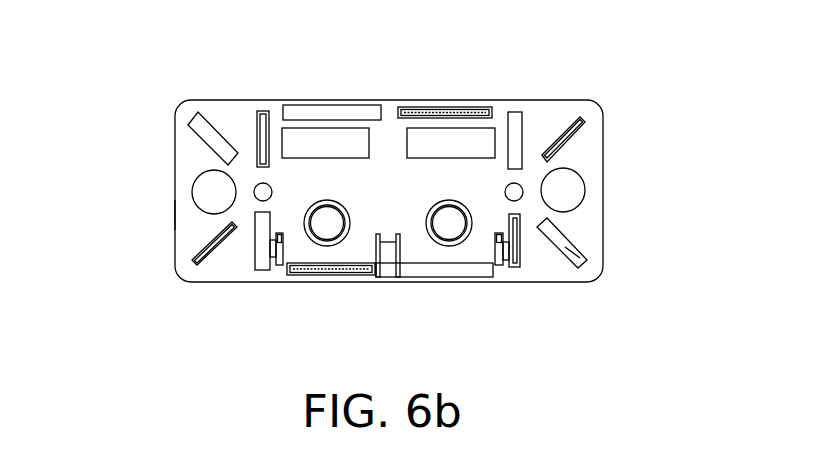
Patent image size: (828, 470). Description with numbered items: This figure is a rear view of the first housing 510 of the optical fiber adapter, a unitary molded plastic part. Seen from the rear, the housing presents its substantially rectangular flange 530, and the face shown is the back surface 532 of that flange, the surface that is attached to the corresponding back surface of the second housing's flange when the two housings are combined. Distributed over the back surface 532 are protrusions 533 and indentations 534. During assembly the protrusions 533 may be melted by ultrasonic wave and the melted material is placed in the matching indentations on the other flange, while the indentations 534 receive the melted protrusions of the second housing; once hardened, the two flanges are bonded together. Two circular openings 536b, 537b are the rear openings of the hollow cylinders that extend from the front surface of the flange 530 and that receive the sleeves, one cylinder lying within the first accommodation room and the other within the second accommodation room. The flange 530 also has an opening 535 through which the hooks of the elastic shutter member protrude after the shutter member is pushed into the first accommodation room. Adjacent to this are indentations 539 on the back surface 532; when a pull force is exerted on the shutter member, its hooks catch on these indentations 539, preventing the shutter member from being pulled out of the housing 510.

The first housing 510 is at (123, 110).
The flange 530 is at (603, 157).
The back surface 532 is at (202, 223).
The protrusions 533 is at (263, 112).
The indentations 534 is at (333, 112).
The opening 535 is at (399, 258).
The opening of cylinder 536b is at (449, 226).
The opening of cylinder 537b is at (327, 226).
The indentations 539 is at (388, 250).